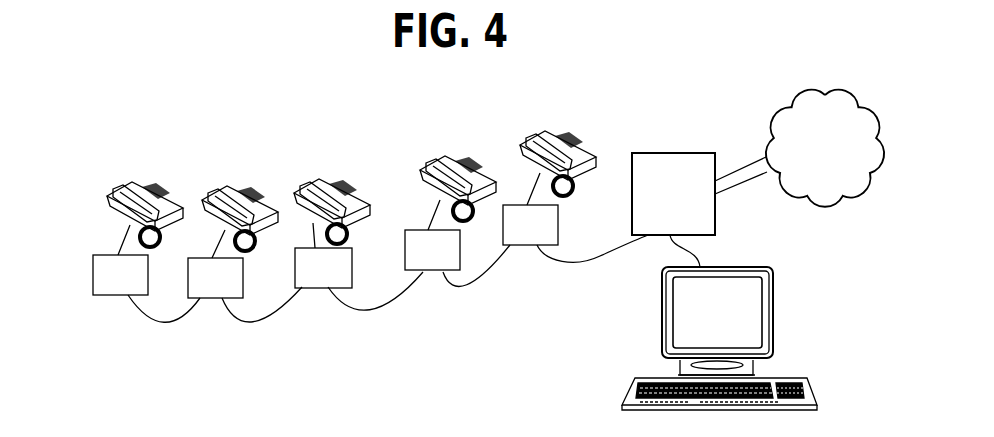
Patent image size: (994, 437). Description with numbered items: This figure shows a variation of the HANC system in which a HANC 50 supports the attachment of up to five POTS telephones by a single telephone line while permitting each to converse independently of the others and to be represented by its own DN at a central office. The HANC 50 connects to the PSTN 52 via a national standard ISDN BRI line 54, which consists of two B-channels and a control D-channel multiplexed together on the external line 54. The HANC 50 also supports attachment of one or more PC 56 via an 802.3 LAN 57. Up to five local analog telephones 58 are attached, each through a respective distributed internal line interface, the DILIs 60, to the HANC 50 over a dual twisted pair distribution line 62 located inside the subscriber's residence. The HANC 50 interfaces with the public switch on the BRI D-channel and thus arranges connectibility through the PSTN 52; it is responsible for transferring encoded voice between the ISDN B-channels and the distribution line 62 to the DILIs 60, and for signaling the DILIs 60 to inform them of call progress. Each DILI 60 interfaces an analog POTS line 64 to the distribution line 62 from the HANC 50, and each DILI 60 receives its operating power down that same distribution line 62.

The HANC 50 is at (668, 153).
The PSTN 52 is at (800, 86).
The ISDN BRI line 54 is at (743, 188).
The PC 56 is at (774, 302).
The 802.3 LAN 57 is at (677, 245).
The local analog telephones 58 is at (132, 184).
The distributed internal line interfaces (DILIs) 60 is at (88, 281).
The distribution line 62 is at (560, 257).
The analog POTS line 64 is at (113, 250).